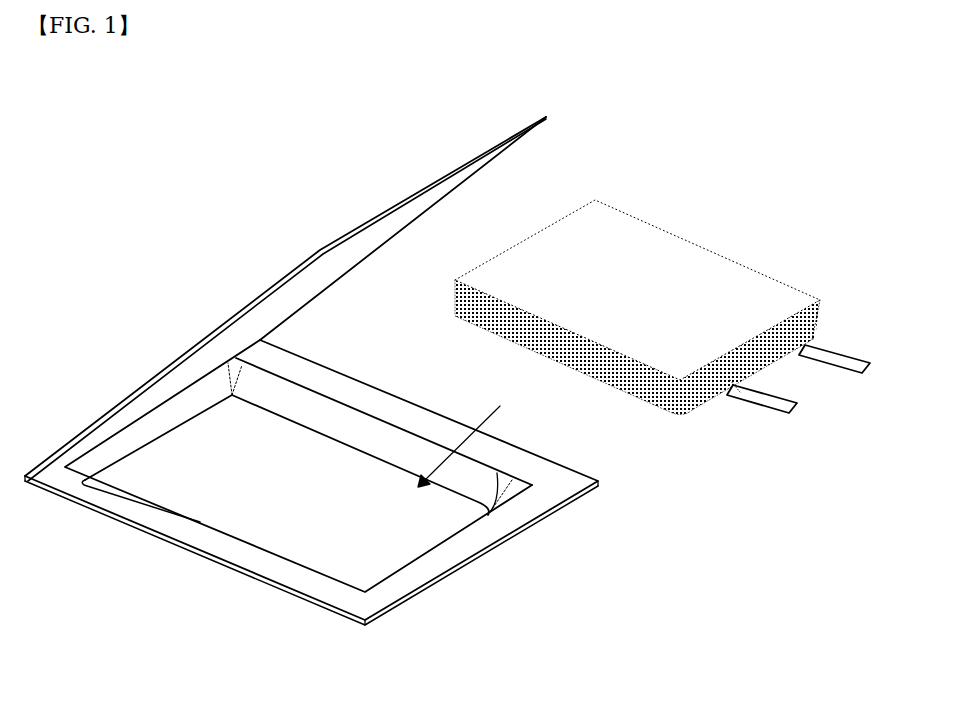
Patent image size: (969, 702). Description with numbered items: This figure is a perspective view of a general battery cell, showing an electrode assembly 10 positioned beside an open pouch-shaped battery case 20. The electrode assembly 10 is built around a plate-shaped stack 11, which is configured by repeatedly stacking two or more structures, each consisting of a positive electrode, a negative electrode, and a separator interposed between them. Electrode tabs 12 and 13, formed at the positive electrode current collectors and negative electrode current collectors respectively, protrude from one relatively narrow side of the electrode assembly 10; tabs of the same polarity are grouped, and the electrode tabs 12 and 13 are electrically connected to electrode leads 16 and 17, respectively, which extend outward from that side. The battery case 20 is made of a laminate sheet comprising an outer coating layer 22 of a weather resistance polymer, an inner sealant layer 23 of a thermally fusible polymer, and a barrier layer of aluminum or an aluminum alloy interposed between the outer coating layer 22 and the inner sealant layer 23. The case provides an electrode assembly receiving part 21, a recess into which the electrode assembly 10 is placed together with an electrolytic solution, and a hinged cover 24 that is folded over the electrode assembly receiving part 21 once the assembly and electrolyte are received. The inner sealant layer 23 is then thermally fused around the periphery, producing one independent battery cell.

The electrode assembly 10 is at (667, 209).
The stack 11 is at (720, 283).
The electrode tab 12 is at (805, 335).
The electrode tab 13 is at (730, 382).
The electrode lead 16 is at (857, 365).
The electrode lead 17 is at (787, 412).
The battery case 20 is at (130, 342).
The electrode assembly receiving part 21 is at (390, 557).
The outer coating layer 22 is at (247, 573).
The inner sealant layer 23 is at (147, 515).
The cover 24 is at (347, 238).